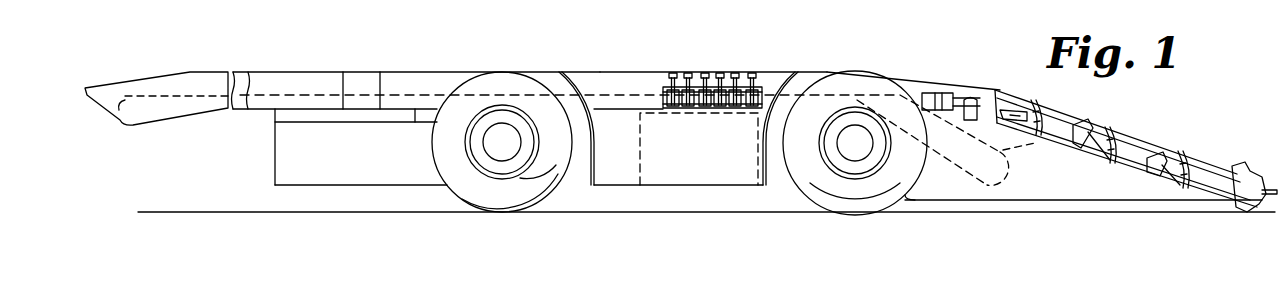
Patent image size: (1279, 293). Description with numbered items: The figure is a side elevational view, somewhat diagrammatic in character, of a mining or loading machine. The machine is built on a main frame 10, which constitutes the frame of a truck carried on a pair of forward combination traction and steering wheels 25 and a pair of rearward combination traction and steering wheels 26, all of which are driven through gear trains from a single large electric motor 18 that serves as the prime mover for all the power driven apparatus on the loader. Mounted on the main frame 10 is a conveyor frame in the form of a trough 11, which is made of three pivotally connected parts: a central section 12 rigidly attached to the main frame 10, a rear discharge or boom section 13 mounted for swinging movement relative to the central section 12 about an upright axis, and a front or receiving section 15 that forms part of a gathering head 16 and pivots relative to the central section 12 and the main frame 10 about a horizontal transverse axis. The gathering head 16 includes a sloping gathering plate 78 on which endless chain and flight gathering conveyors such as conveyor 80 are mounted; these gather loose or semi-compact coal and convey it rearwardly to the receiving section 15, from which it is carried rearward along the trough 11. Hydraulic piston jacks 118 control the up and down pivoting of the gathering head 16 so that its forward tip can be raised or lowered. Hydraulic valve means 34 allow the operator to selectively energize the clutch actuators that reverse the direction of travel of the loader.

The main frame 10 is at (598, 194).
The trough 11 is at (600, 82).
The central section 12 is at (647, 83).
The boom section 13 is at (273, 83).
The front or receiving section 15 is at (990, 103).
The gathering head 16 is at (1060, 178).
The electric motor 18 is at (668, 156).
The forward combination traction and steering wheels 25 is at (885, 188).
The rearward combination traction and steering wheels 26 is at (472, 193).
The hydraulic valve means 34 is at (721, 120).
The sloping gathering plate 78 is at (1130, 170).
The gathering conveyor 80 is at (1210, 158).
The hydraulic piston jacks 118 is at (952, 100).